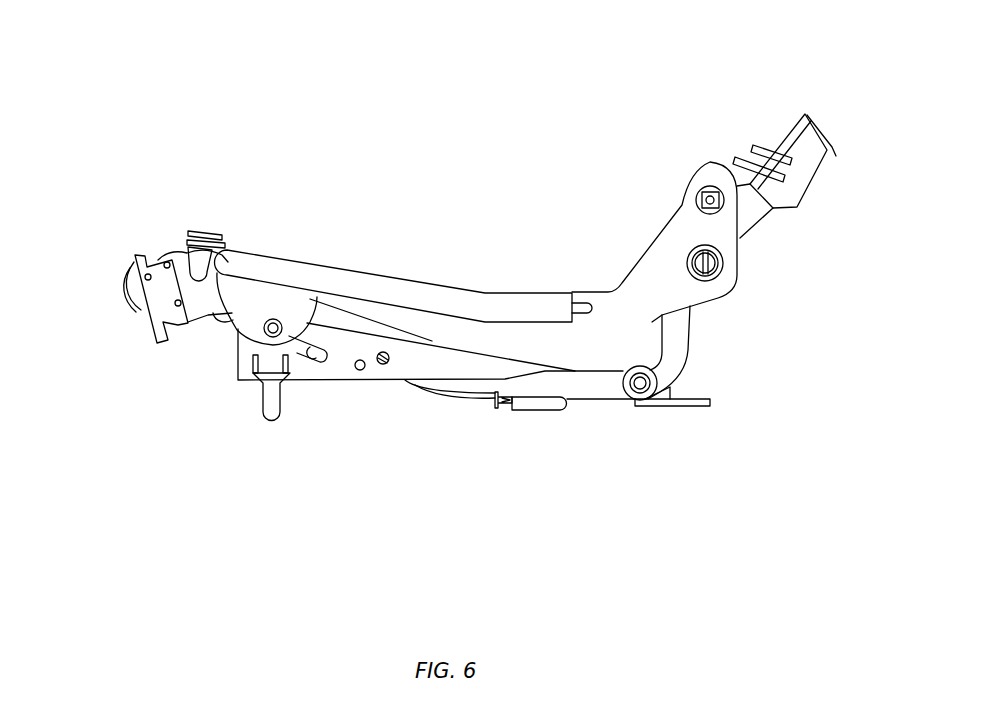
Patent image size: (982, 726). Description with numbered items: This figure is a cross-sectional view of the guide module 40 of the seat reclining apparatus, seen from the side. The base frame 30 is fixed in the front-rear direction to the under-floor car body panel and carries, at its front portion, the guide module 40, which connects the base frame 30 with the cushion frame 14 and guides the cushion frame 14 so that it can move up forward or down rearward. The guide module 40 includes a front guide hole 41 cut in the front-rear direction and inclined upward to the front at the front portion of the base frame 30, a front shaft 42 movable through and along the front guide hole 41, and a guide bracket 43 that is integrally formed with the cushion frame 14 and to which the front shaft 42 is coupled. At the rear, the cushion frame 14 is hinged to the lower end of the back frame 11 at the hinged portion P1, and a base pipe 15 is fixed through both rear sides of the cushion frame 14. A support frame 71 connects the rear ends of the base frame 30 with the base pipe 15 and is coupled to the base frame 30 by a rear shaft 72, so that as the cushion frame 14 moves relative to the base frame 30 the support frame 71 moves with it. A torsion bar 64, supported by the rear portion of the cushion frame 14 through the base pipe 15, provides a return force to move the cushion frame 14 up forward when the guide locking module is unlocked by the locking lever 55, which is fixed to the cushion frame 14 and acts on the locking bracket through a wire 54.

The back frame 11 is at (775, 142).
The cushion frame 14 is at (430, 297).
The base pipe 15 is at (725, 263).
The base frame 30 is at (547, 386).
The guide module 40 is at (230, 338).
The front guide hole 41 is at (322, 364).
The front shaft 42 is at (274, 318).
The guide bracket 43 is at (257, 296).
The wire 54 is at (455, 398).
The locking lever 55 is at (158, 322).
The torsion bar 64 is at (690, 263).
The support frame 71 is at (690, 345).
The rear shaft 72 is at (638, 398).
The hinged portion P1 is at (700, 198).